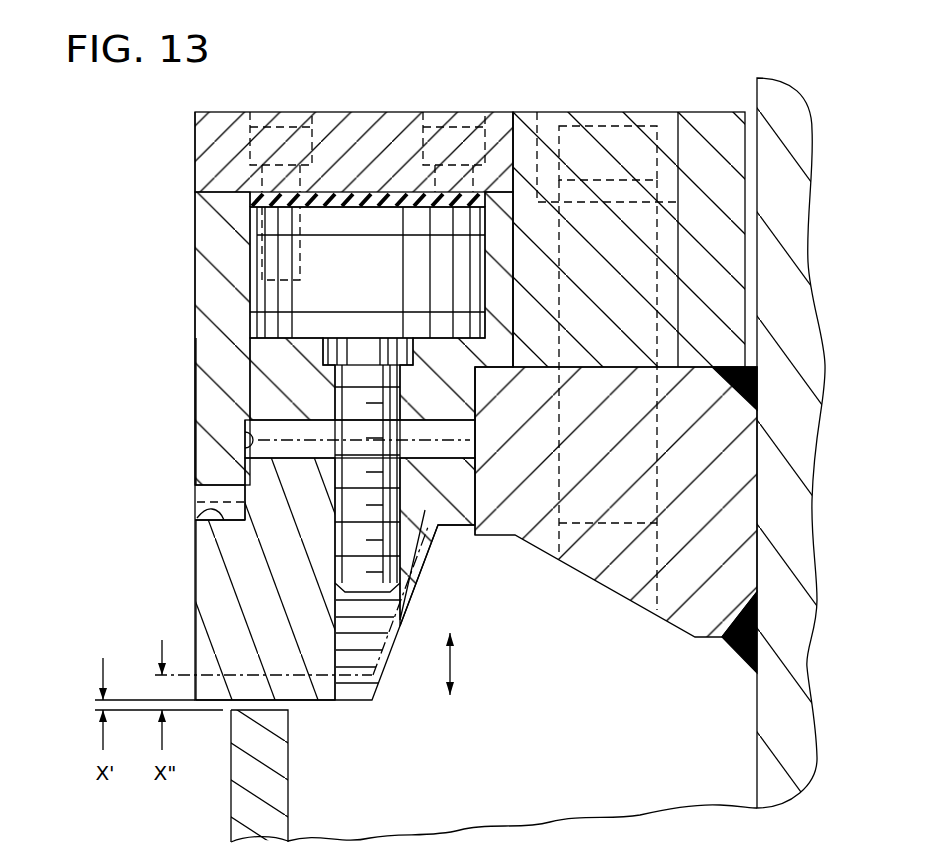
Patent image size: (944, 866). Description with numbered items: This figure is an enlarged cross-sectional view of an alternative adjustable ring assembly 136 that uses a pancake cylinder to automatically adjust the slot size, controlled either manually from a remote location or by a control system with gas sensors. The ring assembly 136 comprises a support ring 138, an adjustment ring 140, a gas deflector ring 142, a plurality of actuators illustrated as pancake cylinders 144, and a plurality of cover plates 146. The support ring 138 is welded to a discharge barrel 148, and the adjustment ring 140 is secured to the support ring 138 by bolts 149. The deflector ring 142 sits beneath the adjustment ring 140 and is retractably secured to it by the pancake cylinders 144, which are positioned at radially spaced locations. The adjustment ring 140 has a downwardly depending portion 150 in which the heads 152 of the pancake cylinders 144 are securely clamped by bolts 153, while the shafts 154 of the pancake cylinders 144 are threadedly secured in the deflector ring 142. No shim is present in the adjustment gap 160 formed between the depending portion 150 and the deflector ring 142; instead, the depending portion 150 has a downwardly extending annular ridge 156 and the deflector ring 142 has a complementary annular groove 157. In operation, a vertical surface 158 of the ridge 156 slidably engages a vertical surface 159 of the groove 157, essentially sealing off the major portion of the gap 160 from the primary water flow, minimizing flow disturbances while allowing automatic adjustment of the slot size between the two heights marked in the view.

The adjustable ring assembly 136 is at (158, 377).
The support ring 138 is at (677, 620).
The adjustment ring 140 is at (197, 282).
The gas deflector ring 142 is at (196, 590).
The pancake cylinder 144 is at (248, 277).
The cover plate 146 is at (394, 112).
The discharge barrel 148 is at (808, 262).
The bolt 149 is at (610, 126).
The downwardly depending portion 150 is at (196, 400).
The head 152 is at (248, 222).
The bolt 153 is at (272, 127).
The shaft 154 is at (335, 544).
The annular ridge 156 is at (196, 457).
The annular groove 157 is at (205, 510).
The vertical surface 158 is at (250, 436).
The vertical surface 159 is at (245, 491).
The adjustment gap 160 is at (268, 432).